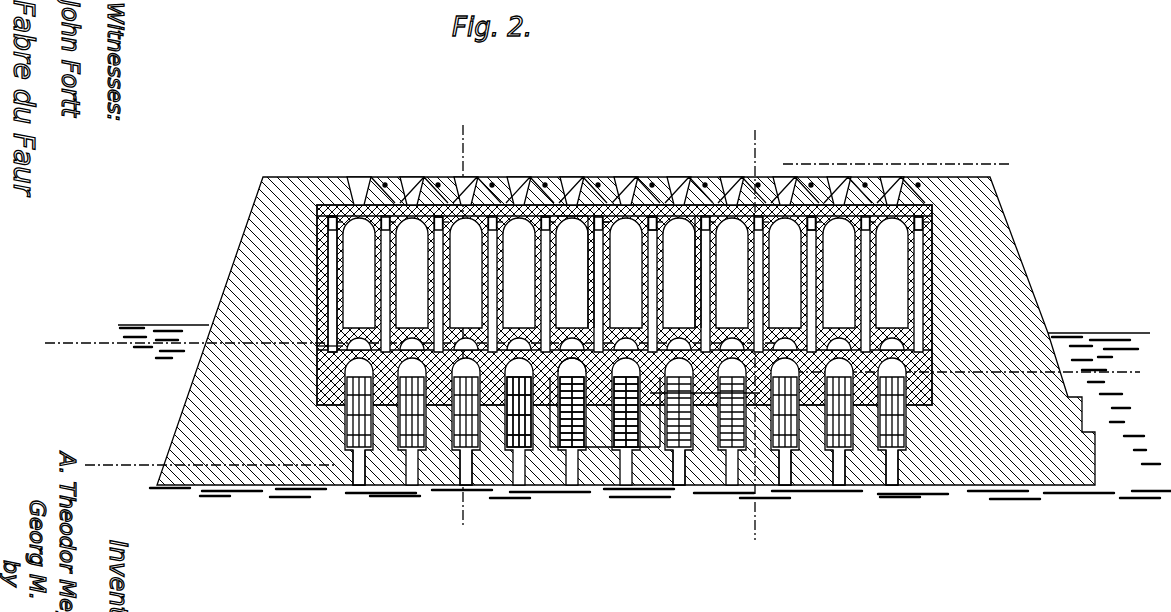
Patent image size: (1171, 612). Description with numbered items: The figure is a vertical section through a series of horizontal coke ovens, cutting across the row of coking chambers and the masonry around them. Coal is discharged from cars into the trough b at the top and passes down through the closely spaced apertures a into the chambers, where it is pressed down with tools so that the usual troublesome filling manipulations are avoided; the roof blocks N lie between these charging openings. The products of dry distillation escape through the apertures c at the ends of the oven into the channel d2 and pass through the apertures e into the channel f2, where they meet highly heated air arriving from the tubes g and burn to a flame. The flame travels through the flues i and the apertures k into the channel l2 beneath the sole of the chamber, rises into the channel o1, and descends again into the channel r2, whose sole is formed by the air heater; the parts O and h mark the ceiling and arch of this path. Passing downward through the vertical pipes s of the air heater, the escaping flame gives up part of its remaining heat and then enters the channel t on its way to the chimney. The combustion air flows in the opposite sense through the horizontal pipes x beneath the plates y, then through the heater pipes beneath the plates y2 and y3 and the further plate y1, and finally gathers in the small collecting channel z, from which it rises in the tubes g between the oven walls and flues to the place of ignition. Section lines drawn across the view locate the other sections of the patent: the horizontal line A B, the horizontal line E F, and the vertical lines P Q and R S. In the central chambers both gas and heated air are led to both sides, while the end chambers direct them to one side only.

The trough b is at (358, 190).
The roof blocks N is at (393, 177).
The channel f2 is at (705, 300).
The channel d2 is at (334, 226).
The apertures e is at (336, 230).
The apertures c is at (463, 175).
The flues i is at (332, 284).
The channel l2 is at (573, 170).
The ceiling O is at (567, 210).
The tubes g is at (631, 330).
The channel r2 is at (606, 222).
The apertures a is at (655, 232).
The channel o1 is at (812, 232).
The apertures k is at (320, 345).
The plates y is at (545, 445).
The checkerwork y1 is at (552, 445).
The plates y2 is at (525, 445).
The plates y3 is at (590, 445).
The collecting channel z is at (600, 447).
The horizontal pipes x is at (735, 455).
The arch h is at (569, 365).
The channel t is at (360, 455).
The vertical pipes s is at (370, 455).
The section line R S is at (472, 226).
The section line R S R is at (454, 440).
The section line P Q is at (763, 224).
The section line P Q P is at (756, 452).
The section line E F E is at (652, 540).
The section line A B is at (967, 373).
The section line A B A is at (195, 465).
The section line E F is at (906, 166).